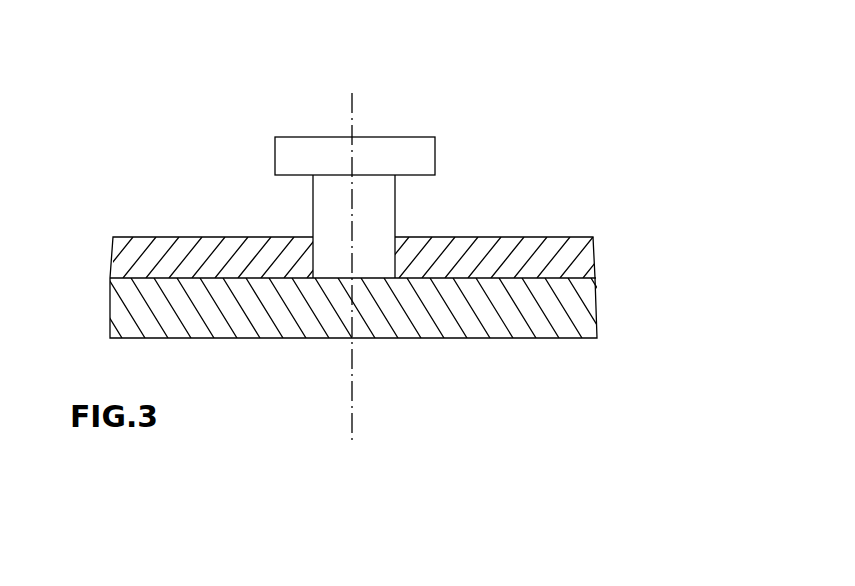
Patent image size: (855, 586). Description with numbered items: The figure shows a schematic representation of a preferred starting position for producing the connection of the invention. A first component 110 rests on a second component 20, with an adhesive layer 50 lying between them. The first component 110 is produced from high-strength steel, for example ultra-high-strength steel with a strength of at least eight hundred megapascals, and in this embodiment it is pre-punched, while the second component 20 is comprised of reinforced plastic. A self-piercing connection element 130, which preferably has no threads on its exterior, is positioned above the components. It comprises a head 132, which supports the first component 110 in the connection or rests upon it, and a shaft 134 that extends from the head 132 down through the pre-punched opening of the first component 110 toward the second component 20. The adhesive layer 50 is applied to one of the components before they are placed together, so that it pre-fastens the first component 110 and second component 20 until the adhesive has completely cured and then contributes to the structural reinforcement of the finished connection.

The self-piercing connection element 130 is at (340, 142).
The head 132 is at (418, 148).
The shaft 134 is at (333, 206).
The first component 110 is at (575, 262).
The second component 20 is at (575, 320).
The adhesive layer 50 is at (110, 278).